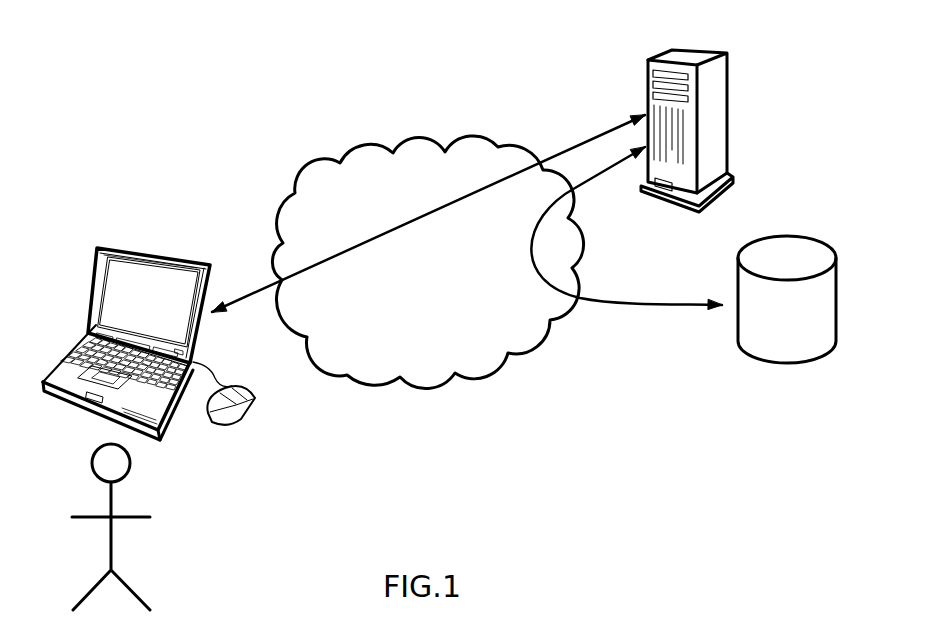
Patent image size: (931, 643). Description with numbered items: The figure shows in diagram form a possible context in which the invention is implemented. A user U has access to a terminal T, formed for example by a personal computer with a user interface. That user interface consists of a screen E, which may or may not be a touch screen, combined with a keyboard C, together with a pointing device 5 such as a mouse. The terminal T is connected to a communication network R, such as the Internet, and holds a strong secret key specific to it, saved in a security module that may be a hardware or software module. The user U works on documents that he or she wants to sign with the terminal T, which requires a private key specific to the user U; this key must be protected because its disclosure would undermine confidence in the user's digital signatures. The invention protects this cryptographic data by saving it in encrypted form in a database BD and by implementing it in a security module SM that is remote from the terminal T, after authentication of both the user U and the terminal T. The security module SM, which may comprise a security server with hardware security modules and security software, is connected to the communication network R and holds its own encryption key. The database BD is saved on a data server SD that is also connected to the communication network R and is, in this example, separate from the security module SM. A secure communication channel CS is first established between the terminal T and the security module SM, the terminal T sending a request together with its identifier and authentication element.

The terminal T is at (125, 247).
The screen E is at (116, 278).
The keyboard C is at (95, 354).
The mouse 5 is at (258, 401).
The communication network R is at (467, 369).
The secure communication channel CS is at (397, 227).
The security module SM is at (696, 52).
The data server SD is at (787, 245).
The database BD is at (792, 314).
The user U is at (147, 536).